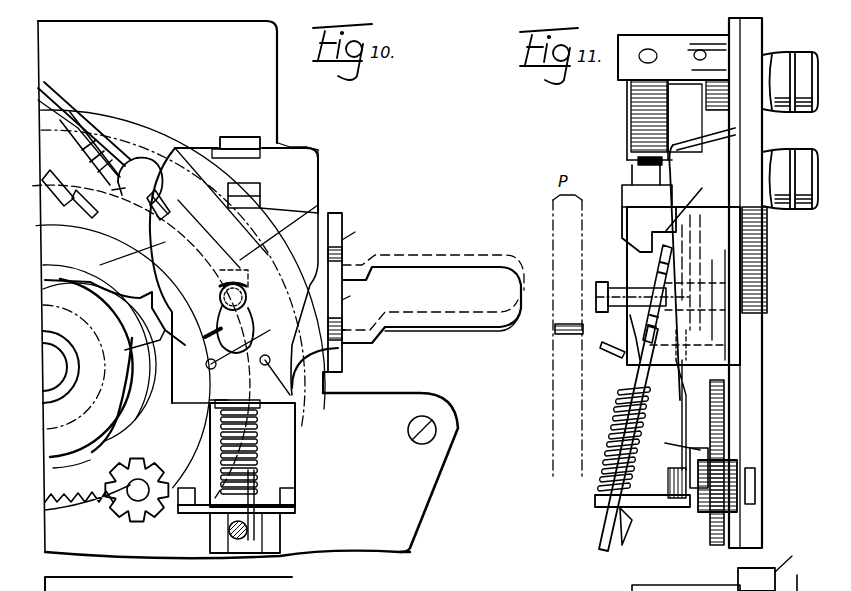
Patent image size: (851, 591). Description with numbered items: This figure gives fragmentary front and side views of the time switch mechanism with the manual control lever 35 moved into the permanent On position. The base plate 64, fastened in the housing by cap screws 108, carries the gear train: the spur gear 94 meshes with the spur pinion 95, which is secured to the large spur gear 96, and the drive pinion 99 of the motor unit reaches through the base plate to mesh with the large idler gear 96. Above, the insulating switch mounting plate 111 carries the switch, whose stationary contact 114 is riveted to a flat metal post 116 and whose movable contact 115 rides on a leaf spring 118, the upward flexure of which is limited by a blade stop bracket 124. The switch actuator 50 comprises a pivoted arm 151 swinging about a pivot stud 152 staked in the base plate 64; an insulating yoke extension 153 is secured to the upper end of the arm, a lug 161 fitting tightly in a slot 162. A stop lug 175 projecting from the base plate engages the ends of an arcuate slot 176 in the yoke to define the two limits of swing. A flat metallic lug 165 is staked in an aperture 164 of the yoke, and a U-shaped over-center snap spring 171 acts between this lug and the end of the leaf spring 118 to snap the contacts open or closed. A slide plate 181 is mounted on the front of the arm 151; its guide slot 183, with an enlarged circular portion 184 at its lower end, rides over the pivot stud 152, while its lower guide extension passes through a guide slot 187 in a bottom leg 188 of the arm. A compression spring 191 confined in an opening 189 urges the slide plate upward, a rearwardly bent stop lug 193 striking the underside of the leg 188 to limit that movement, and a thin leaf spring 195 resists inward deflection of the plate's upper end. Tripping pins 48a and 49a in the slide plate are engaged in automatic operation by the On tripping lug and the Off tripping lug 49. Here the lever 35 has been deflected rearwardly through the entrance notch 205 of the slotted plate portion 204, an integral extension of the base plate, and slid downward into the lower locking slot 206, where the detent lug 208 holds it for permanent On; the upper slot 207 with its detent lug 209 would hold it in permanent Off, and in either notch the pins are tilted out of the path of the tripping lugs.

In FIG. 10, the switch mounting plate 111 is at (230, 59).
In FIG. 11, the switch mounting plate 111 is at (752, 28).
In FIG. 10, the base plate 64 is at (430, 500).
In FIG. 10, the cap screws 108 is at (428, 418).
In FIG. 10, the slide plate 181 is at (150, 420).
In FIG. 10, the spur gear 94 is at (90, 490).
In FIG. 10, the spur pinion 95 is at (145, 500).
In FIG. 11, the spur pinion 95 is at (679, 459).
In FIG. 10, the switch actuator 50 is at (170, 108).
In FIG. 10, the stop lug 175 is at (232, 136).
In FIG. 11, the stop lug 175 is at (690, 142).
In FIG. 10, the arcuate slot 176 is at (280, 143).
In FIG. 10, the switch operating yoke extension 153 is at (313, 148).
In FIG. 10, the slot 162 is at (320, 164).
In FIG. 10, the lug 161 is at (258, 176).
In FIG. 10, the guide slot 183 is at (322, 210).
In FIG. 10, the pivot stud 152 is at (343, 245).
In FIG. 10, the detent lug 209 is at (343, 257).
In FIG. 11, the detent lug 209 is at (622, 203).
In FIG. 10, the enlarged circular portion 184 is at (300, 290).
In FIG. 10, the detent lug 208 is at (343, 330).
In FIG. 11, the detent lug 208 is at (630, 326).
In FIG. 10, the manual control lever 35 is at (456, 265).
In FIG. 11, the manual control lever 35 is at (660, 276).
In FIG. 10, the large spur gear 96 is at (248, 332).
In FIG. 11, the large spur gear 96 is at (726, 428).
In FIG. 10, the Off tripping lug 49 is at (152, 318).
In FIG. 11, the Off tripping lug 49 is at (556, 331).
In FIG. 10, the tripping pin 49a is at (160, 337).
In FIG. 10, the tripping pin 48a is at (270, 408).
In FIG. 11, the tripping pin 48a is at (602, 346).
In FIG. 10, the opening 189 is at (296, 428).
In FIG. 10, the compression spring 191 is at (258, 445).
In FIG. 11, the compression spring 191 is at (618, 412).
In FIG. 10, the drive pinion 99 is at (262, 472).
In FIG. 11, the drive pinion 99 is at (724, 478).
In FIG. 10, the pivoted arm 151 is at (296, 492).
In FIG. 10, the bottom leg 188 is at (296, 508).
In FIG. 11, the bottom leg 188 is at (595, 500).
In FIG. 10, the stop lug 193 is at (250, 530).
In FIG. 11, the stop lug 193 is at (638, 527).
In FIG. 10, the leaf spring 118 is at (50, 92).
In FIG. 10, the movable contact 115 is at (80, 118).
In FIG. 10, the blade stop bracket 124 is at (105, 135).
In FIG. 11, the blade stop bracket 124 is at (640, 118).
In FIG. 10, the over-center snap spring 171 is at (140, 157).
In FIG. 11, the over-center snap spring 171 is at (636, 160).
In FIG. 10, the lug 165 is at (172, 212).
In FIG. 10, the stationary contact 114 is at (70, 202).
In FIG. 10, the flat metal post 116 is at (96, 212).
In FIG. 10, the aperture 164 is at (114, 259).
In FIG. 11, the entrance slot 205 is at (615, 260).
In FIG. 11, the upper slot 207 is at (693, 200).
In FIG. 11, the slotted plate portion 204 is at (722, 226).
In FIG. 11, the lower slot 206 is at (675, 325).
In FIG. 11, the guide slot 187 is at (604, 512).
In FIG. 11, the leaf spring 195 is at (678, 395).